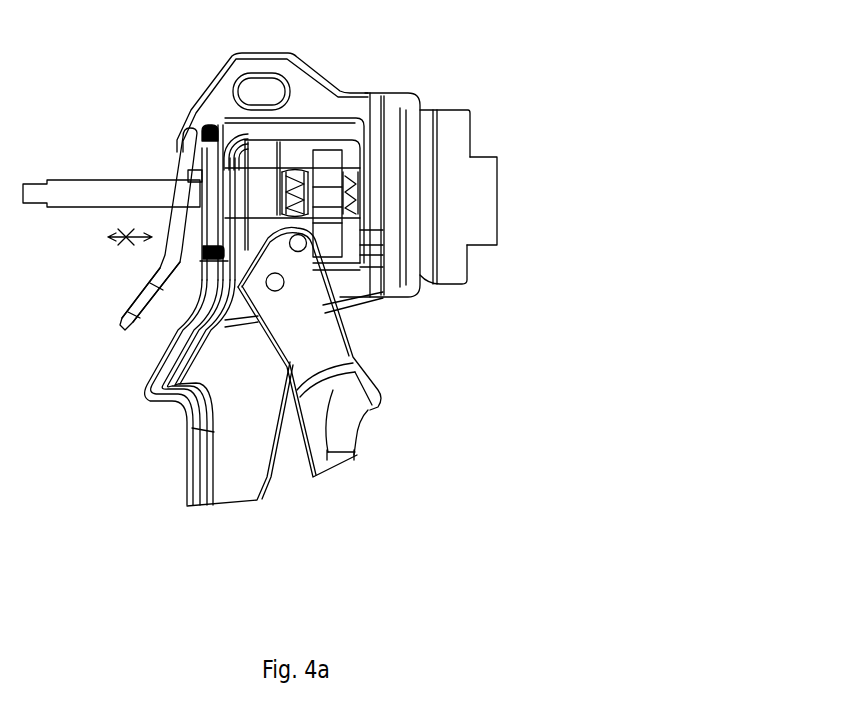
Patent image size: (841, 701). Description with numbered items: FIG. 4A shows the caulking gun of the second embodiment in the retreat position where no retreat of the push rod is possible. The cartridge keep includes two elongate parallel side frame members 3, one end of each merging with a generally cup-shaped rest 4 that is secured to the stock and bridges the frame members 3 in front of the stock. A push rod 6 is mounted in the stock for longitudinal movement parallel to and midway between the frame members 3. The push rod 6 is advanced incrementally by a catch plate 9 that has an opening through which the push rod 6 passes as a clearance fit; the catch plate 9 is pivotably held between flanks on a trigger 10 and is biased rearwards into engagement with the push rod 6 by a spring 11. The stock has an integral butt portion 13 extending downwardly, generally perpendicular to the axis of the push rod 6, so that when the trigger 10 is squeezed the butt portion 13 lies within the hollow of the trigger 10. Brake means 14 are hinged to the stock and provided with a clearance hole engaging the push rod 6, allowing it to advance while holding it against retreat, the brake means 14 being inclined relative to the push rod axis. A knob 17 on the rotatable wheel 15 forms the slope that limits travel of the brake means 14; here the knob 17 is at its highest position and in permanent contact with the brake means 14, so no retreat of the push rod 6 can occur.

The side frame member 3 is at (487, 197).
The rest 4 is at (448, 128).
The push rod 6 is at (85, 192).
The catch plate 9 is at (327, 162).
The trigger 10 is at (373, 390).
The spring 11 is at (290, 182).
The butt portion 13 is at (263, 477).
The brake means 14 is at (127, 325).
The rotatable wheel 15 is at (207, 230).
The knob 17 is at (188, 172).